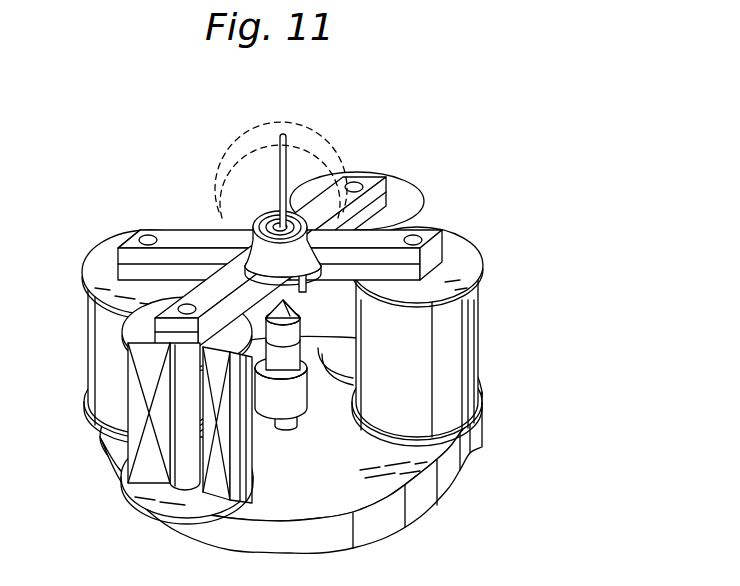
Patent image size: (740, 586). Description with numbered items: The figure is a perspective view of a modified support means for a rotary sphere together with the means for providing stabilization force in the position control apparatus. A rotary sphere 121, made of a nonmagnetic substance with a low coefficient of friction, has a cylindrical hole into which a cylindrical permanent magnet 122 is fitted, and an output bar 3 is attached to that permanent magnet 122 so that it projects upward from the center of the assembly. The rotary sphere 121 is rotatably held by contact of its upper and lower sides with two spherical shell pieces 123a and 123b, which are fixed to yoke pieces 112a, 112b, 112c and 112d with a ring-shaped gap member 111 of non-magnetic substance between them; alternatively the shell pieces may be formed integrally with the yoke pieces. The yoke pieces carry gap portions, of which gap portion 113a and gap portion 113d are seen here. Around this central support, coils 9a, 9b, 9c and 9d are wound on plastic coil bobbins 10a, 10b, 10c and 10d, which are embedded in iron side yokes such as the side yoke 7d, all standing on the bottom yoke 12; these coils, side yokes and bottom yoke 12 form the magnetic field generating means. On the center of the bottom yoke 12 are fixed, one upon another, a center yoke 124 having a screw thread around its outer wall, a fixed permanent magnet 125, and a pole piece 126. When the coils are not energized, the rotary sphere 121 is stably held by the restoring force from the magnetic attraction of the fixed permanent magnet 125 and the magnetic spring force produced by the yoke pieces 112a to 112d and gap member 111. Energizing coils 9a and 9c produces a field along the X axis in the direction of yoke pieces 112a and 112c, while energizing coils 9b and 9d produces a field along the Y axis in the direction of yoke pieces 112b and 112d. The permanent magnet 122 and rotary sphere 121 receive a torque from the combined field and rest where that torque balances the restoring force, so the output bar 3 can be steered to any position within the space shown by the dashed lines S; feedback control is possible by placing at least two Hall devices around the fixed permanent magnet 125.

The output bar 3 is at (292, 130).
The space shown by dashed lines S is at (333, 135).
The side yoke 7d is at (180, 432).
The coil 9a is at (478, 340).
The coil 9b is at (352, 348).
The coil 9c is at (95, 355).
The coil 9d is at (250, 490).
The coil bobbin 10a is at (478, 272).
The coil bobbin 10b is at (413, 212).
The coil bobbin 10c is at (93, 264).
The coil bobbin 10d is at (112, 386).
The bottom yoke 12 is at (390, 520).
The gap member 111 is at (318, 213).
The yoke piece 112a is at (395, 216).
The yoke piece 112b is at (336, 194).
The yoke piece 112c is at (177, 237).
The yoke piece 112d is at (112, 321).
The gap portion 113a is at (445, 220).
The gap portion 113d is at (173, 238).
The rotary sphere 121 is at (255, 217).
The permanent magnet 122 is at (271, 212).
The spherical shell piece 123a is at (247, 227).
The spherical shell piece 123b is at (301, 287).
The center yoke 124 is at (278, 375).
The fixed permanent magnet 125 is at (293, 408).
The pole piece 126 is at (290, 323).